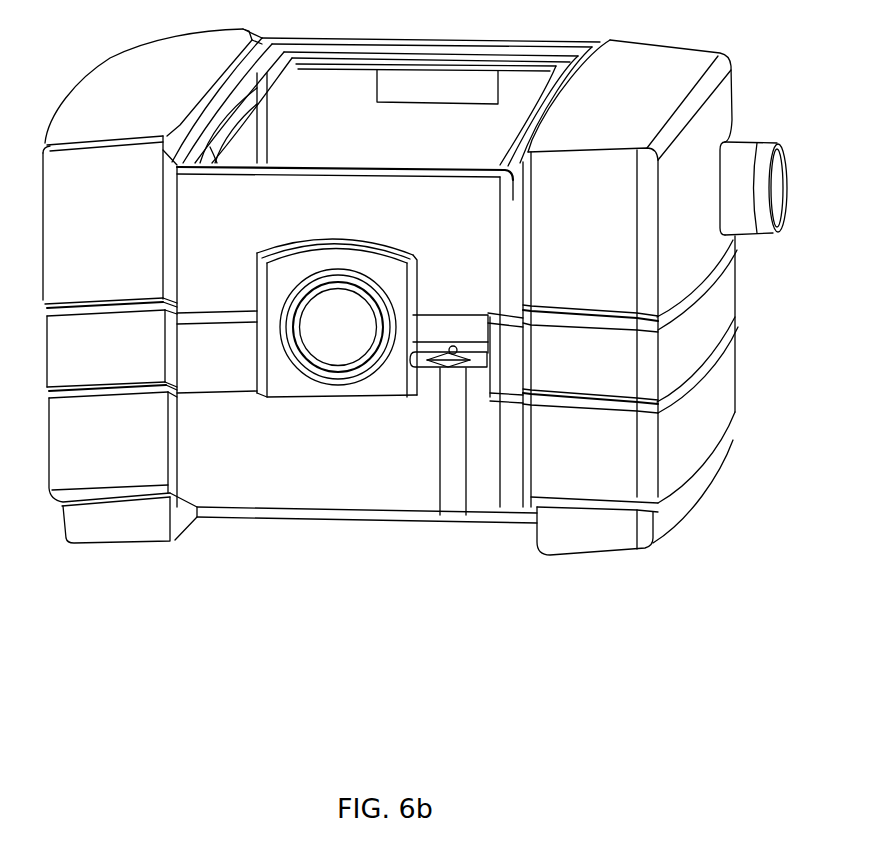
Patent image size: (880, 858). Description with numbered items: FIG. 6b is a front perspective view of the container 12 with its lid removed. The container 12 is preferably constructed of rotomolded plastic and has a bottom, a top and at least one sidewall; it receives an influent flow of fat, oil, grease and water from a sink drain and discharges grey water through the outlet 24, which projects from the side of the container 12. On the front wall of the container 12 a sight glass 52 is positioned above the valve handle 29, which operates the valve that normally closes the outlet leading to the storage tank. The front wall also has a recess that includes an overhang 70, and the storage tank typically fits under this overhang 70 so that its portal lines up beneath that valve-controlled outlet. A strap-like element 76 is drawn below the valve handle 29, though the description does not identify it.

The container 12 is at (643, 125).
The outlet 24 is at (777, 182).
The valve handle 29 is at (488, 368).
The sight glass 52 is at (360, 338).
The overhang 70 is at (222, 400).
The strap 76 is at (473, 393).